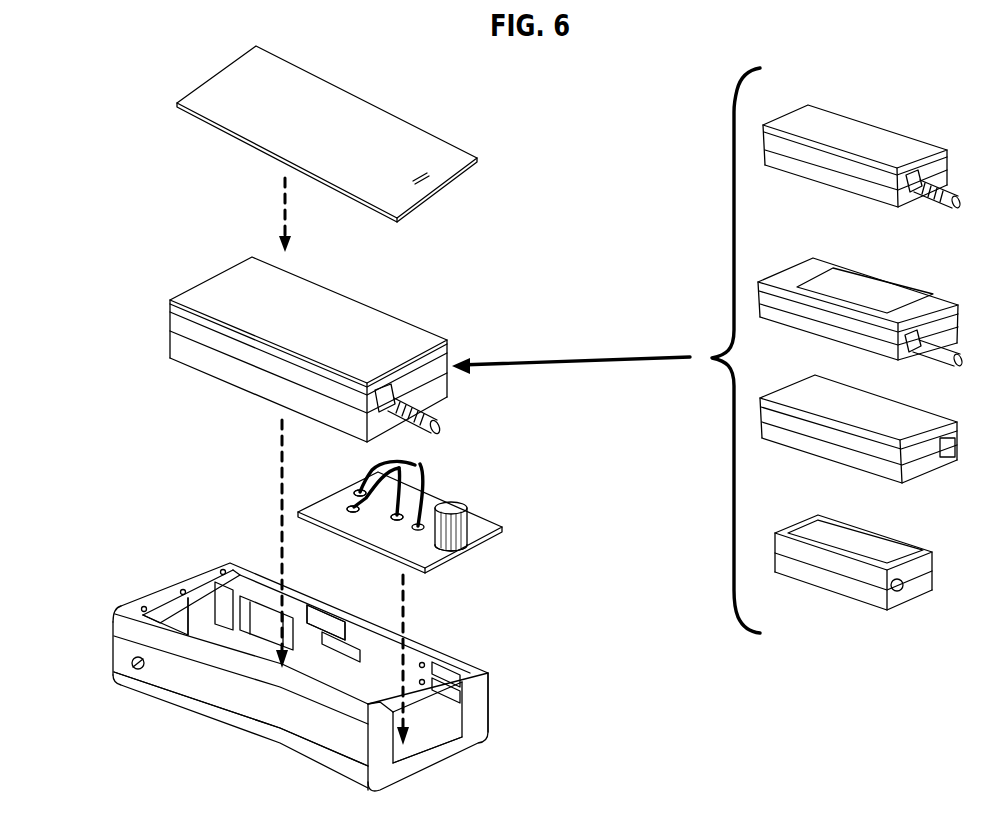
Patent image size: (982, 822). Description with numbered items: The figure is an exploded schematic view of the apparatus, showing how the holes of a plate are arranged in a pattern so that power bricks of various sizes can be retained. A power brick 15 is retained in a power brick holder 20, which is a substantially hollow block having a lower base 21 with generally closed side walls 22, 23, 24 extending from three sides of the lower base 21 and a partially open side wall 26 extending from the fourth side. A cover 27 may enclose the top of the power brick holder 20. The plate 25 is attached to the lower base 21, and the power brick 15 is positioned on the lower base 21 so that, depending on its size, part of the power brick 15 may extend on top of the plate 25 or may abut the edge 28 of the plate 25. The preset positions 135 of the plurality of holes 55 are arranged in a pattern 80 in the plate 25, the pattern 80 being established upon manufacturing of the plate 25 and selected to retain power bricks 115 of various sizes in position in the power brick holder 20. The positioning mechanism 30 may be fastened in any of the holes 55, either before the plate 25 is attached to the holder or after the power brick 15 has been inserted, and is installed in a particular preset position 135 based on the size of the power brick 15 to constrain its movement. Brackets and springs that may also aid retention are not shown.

The power brick 15 is at (179, 329).
The power brick holder 20 is at (106, 655).
The lower base 21 is at (424, 732).
The side wall 22 is at (262, 705).
The side wall 23 is at (176, 614).
The side wall 24 is at (370, 643).
The plate 25 is at (490, 528).
The partially open side wall 26 is at (470, 718).
The cover 27 is at (208, 102).
The edge 28 is at (330, 503).
The positioning mechanism 30 is at (466, 510).
The holes 55 is at (394, 457).
The pattern 80 is at (373, 526).
The power bricks 115 is at (707, 350).
The preset positions 135 is at (438, 556).